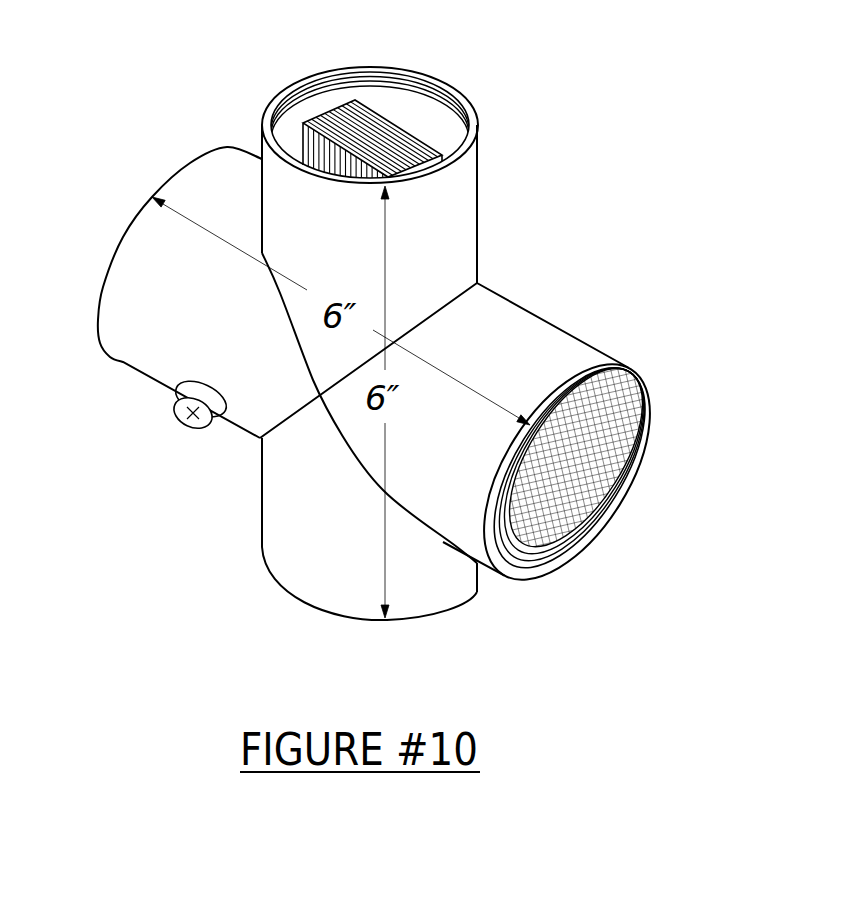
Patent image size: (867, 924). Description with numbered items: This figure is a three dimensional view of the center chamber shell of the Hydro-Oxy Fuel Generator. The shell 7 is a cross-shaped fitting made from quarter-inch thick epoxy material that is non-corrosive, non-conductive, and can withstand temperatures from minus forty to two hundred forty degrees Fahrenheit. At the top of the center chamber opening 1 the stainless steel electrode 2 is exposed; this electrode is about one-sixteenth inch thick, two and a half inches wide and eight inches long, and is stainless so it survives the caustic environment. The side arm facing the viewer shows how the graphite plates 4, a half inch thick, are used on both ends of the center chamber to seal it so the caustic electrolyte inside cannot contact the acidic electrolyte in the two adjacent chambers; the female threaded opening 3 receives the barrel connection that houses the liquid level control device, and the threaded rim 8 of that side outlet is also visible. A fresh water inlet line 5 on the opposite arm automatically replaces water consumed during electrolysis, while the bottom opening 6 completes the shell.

The top of the center chamber opening 1 is at (300, 87).
The stainless steel electrode 2 is at (385, 113).
The female threaded opening 3 is at (453, 110).
The graphite plates 4 is at (575, 434).
The fresh water inlet line 5 is at (195, 424).
The bottom opening 6 is at (465, 593).
The shell 7 is at (125, 365).
The side outlet rim 8 is at (590, 523).